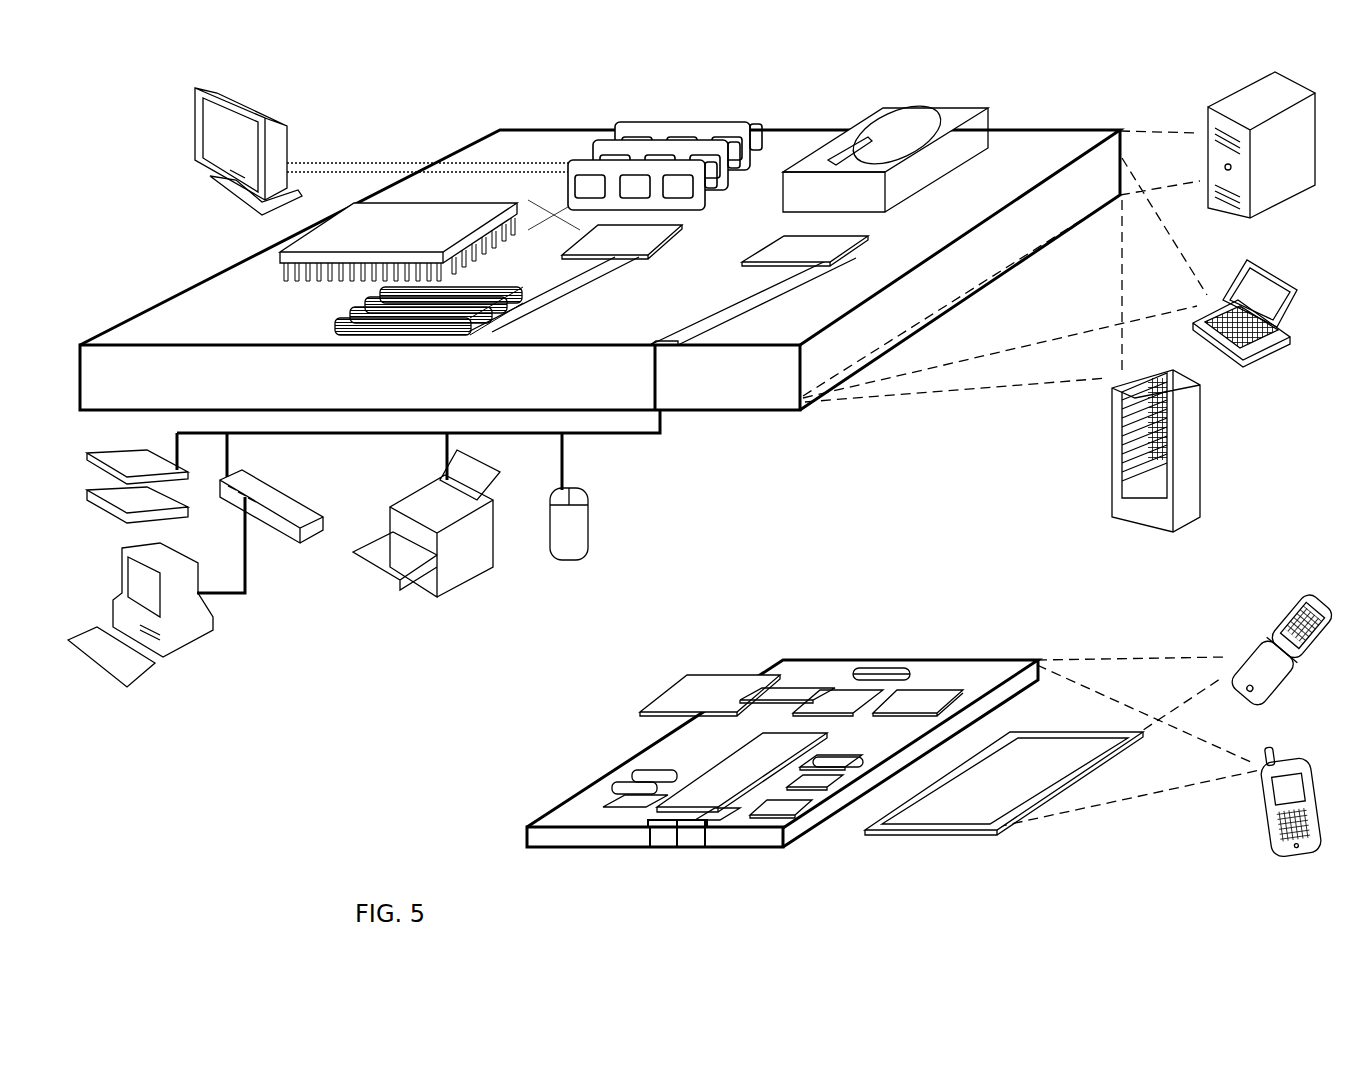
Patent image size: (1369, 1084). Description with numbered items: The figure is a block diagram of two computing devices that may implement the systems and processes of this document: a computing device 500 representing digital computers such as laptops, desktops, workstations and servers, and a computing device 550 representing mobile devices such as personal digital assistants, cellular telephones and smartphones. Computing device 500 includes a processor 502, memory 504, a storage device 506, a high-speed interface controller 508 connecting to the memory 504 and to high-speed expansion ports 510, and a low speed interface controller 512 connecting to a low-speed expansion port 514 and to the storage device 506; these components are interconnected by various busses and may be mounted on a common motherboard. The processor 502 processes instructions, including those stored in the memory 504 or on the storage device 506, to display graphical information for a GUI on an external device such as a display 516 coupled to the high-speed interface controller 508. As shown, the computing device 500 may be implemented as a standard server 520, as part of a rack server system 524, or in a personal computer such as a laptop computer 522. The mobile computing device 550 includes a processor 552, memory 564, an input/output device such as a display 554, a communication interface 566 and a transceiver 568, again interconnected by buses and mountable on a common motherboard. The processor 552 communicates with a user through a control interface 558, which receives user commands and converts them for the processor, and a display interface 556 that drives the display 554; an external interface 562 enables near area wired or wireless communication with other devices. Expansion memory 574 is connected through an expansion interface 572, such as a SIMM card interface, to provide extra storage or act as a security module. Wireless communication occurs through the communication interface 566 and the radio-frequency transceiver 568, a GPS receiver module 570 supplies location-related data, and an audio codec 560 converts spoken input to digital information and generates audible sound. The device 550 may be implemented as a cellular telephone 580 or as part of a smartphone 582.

The computing device 500 is at (412, 98).
The processor 502 is at (282, 258).
The memory 504 is at (640, 132).
The storage device 506 is at (880, 112).
The high-speed interface controller 508 is at (562, 242).
The high-speed expansion ports 510 is at (352, 300).
The low speed interface controller 512 is at (800, 246).
The low-speed expansion port 514 is at (672, 346).
The display 516 is at (197, 88).
The standard server 520 is at (1210, 115).
The laptop computer 522 is at (1242, 262).
The rack server system 524 is at (1112, 485).
The computing device 550 is at (757, 636).
The processor 552 is at (703, 830).
The display 554 is at (998, 836).
The display interface 556 is at (785, 832).
The control interface 558 is at (835, 815).
The audio codec 560 is at (840, 790).
The external interface 562 is at (672, 832).
The memory 564 is at (618, 792).
The communication interface 566 is at (837, 693).
The transceiver 568 is at (920, 702).
The GPS receiver module 570 is at (883, 670).
The expansion interface 572 is at (760, 688).
The expansion memory 574 is at (693, 678).
The cellular telephone 580 is at (1287, 605).
The smartphone 582 is at (1272, 760).